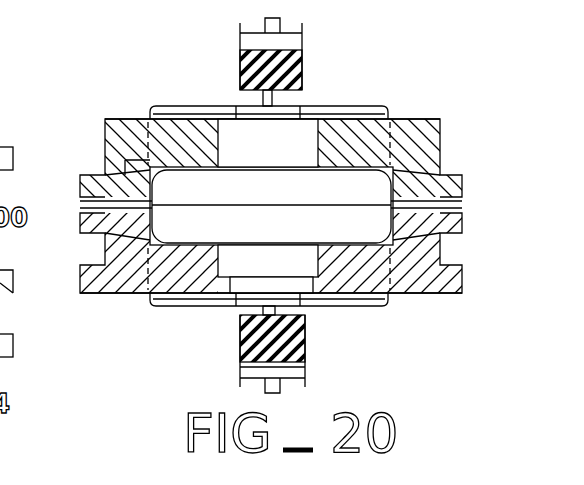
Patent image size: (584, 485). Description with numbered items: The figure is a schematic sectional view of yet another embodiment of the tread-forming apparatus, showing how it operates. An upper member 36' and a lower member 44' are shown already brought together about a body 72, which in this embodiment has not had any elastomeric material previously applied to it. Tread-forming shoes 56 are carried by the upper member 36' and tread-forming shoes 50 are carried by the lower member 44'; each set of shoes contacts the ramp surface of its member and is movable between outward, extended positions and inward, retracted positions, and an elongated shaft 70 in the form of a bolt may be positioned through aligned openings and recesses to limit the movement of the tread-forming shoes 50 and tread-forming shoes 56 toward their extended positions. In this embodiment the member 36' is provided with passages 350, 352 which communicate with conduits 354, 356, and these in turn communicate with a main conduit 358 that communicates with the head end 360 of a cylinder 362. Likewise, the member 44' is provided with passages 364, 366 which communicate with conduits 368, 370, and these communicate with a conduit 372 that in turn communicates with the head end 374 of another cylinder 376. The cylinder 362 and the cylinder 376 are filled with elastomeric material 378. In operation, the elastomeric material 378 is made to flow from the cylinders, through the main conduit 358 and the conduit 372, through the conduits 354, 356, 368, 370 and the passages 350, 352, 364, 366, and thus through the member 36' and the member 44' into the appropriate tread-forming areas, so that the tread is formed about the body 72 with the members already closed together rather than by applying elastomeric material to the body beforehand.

The member 36' is at (305, 102).
The member 44' is at (289, 323).
The tread-forming shoes 50 is at (118, 275).
The tread-forming shoes 56 is at (137, 183).
The elongated shaft 70 is at (7, 133).
The body 72 is at (362, 194).
The passage 350 is at (145, 125).
The passage 352 is at (410, 143).
The conduit 354 is at (175, 103).
The conduit 356 is at (381, 102).
The main conduit 358 is at (277, 100).
The head end 360 is at (237, 65).
The cylinder 362 is at (307, 33).
The passage 364 is at (140, 292).
The passage 366 is at (395, 293).
The conduit 368 is at (217, 307).
The conduit 370 is at (323, 308).
The conduit 372 is at (235, 315).
The head end 374 is at (313, 345).
The cylinder 376 is at (318, 383).
The elastomeric material 378 is at (282, 70).